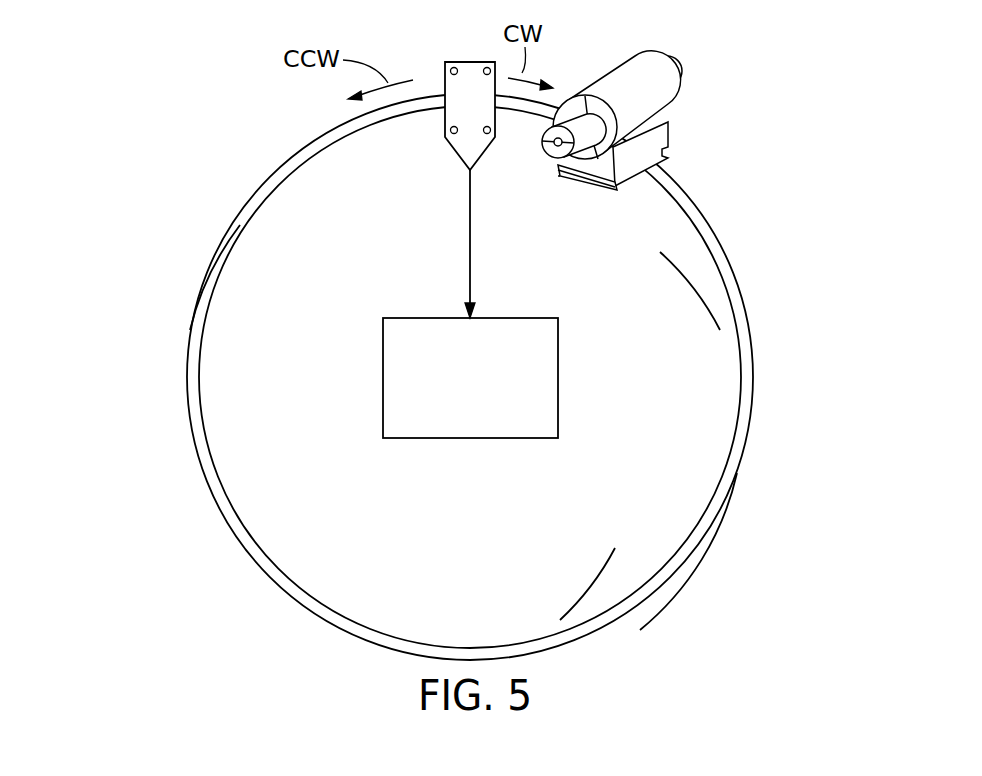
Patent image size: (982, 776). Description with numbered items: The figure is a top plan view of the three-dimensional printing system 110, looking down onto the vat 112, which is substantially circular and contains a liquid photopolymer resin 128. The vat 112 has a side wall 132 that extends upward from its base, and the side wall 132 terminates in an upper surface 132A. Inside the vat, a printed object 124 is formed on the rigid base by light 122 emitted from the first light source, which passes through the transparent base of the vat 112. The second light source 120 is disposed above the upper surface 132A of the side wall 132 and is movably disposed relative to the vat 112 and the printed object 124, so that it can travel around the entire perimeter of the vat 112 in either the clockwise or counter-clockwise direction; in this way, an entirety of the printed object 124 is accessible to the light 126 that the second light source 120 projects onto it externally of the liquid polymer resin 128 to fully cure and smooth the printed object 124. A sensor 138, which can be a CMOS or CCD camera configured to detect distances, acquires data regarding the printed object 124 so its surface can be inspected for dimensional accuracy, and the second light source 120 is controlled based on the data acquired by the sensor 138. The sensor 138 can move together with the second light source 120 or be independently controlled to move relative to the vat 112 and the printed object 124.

The 3D printing system 110 is at (157, 369).
The vat 112 is at (751, 316).
The second light source 120 is at (445, 80).
The light 122 is at (660, 252).
The printed object 124 is at (560, 363).
The light 126 is at (470, 240).
The liquid photopolymer resin 128 is at (615, 548).
The side wall 132 is at (737, 473).
The upper surface 132A is at (240, 225).
The sensor 138 is at (684, 112).